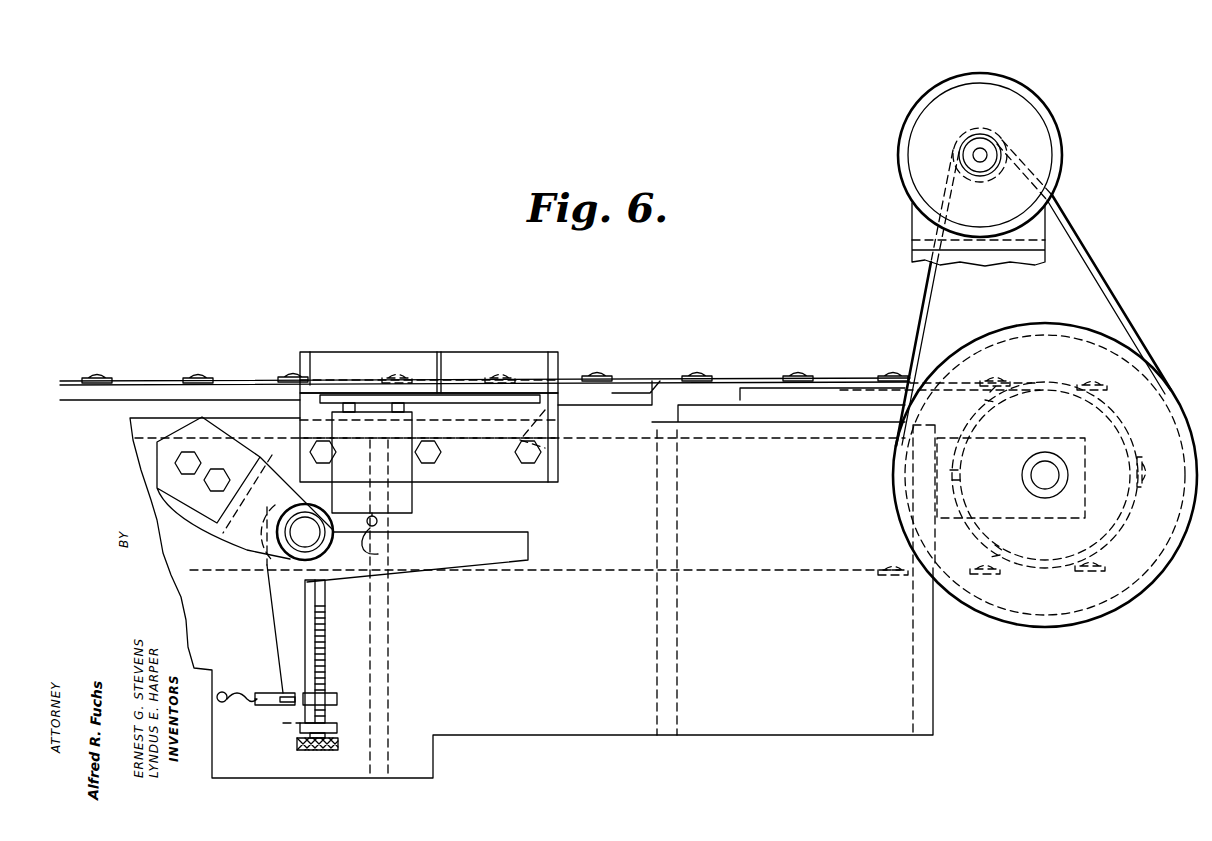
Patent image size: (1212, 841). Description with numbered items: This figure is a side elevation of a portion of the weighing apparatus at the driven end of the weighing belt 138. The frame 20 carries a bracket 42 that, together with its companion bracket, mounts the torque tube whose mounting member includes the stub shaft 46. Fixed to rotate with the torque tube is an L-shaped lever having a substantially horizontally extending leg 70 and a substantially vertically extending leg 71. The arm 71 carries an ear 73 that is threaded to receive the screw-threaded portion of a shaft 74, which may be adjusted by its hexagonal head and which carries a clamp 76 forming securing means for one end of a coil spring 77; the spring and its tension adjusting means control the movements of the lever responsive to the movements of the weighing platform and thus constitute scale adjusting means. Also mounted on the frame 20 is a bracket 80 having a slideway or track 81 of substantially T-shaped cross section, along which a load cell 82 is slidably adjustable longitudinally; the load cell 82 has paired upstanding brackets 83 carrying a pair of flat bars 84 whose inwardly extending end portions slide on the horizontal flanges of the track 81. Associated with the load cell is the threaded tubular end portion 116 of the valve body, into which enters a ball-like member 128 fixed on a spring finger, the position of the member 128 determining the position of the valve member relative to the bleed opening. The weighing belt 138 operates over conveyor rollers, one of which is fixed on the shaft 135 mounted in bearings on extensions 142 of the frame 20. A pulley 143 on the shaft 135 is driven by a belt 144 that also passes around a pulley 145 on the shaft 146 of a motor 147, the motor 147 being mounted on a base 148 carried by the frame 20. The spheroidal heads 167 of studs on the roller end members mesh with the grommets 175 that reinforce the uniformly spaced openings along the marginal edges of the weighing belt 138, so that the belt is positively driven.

The frame 20 is at (923, 657).
The bracket 42 is at (193, 502).
The stub shaft 46 is at (302, 540).
The horizontally extending leg 70 is at (490, 549).
The vertically extending leg 71 is at (290, 625).
The ear 73 is at (333, 728).
The shaft 74 is at (325, 650).
The clamp 76 is at (330, 697).
The coil spring 77 is at (226, 692).
The bracket 80 is at (540, 352).
The slideway or track 81 is at (472, 398).
The load cell 82 is at (405, 495).
The upstanding brackets 83 is at (348, 412).
The flat bars 84 is at (357, 397).
The threaded tubular end portion 116 is at (378, 520).
The ball-like member 128 is at (378, 554).
The shaft 135 is at (1052, 482).
The weighing belt 138 is at (828, 378).
The extensions 142 is at (1005, 440).
The pulley 143 is at (1110, 344).
The belt 144 is at (1100, 290).
The pulley 145 is at (1006, 140).
The shaft 146 is at (973, 155).
The motor 147 is at (1063, 178).
The base 148 is at (1038, 230).
The spheroidal heads 167 is at (995, 444).
The grommets 175 is at (97, 378).